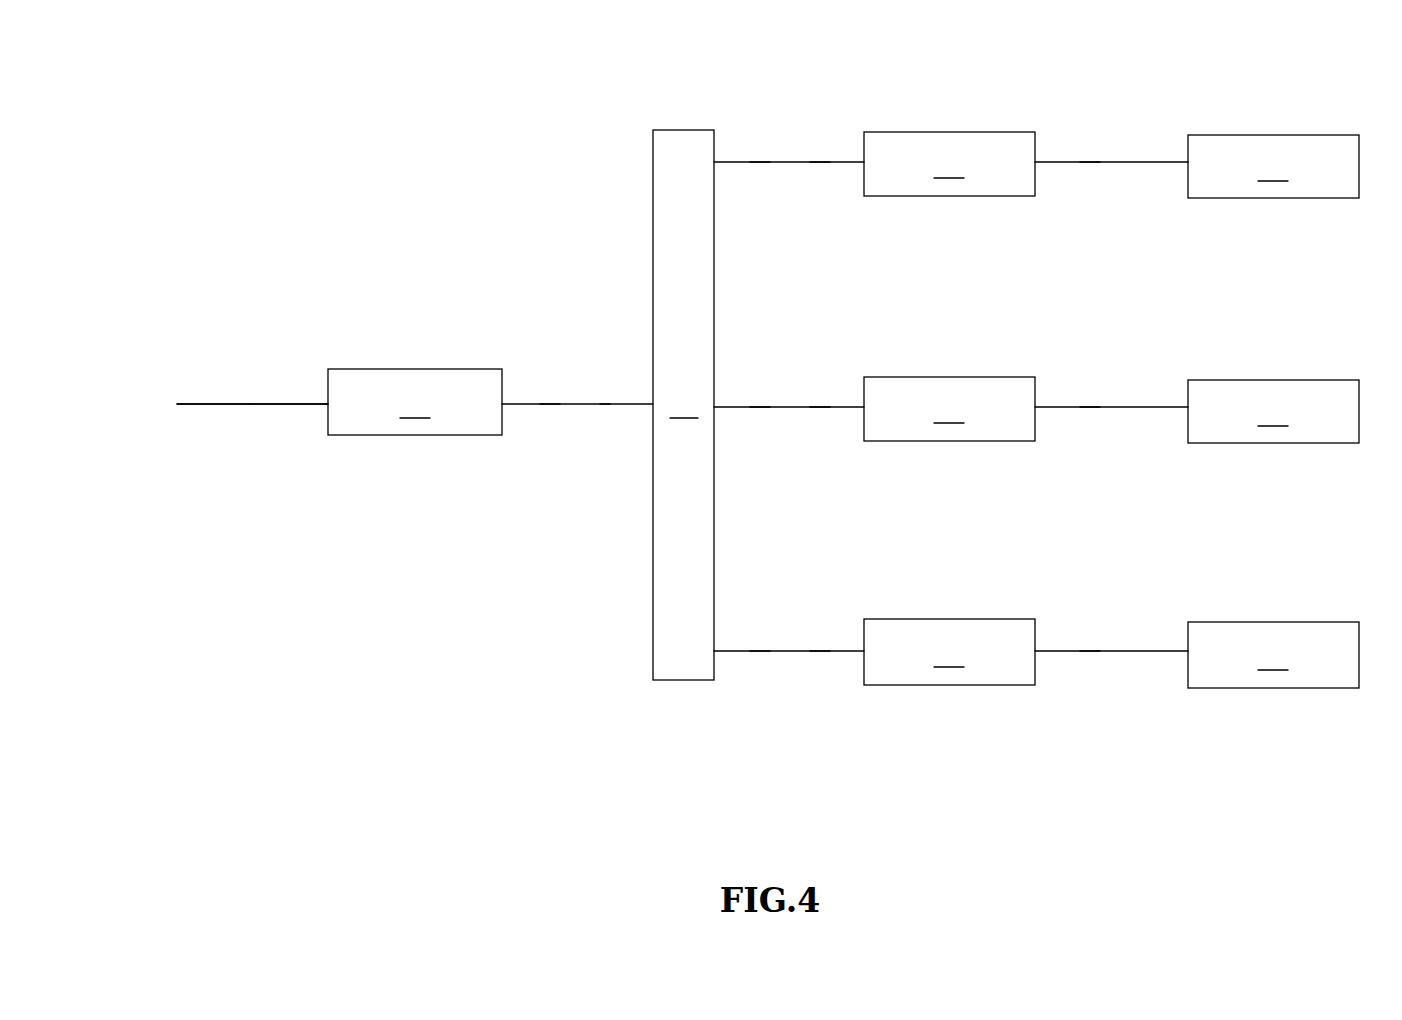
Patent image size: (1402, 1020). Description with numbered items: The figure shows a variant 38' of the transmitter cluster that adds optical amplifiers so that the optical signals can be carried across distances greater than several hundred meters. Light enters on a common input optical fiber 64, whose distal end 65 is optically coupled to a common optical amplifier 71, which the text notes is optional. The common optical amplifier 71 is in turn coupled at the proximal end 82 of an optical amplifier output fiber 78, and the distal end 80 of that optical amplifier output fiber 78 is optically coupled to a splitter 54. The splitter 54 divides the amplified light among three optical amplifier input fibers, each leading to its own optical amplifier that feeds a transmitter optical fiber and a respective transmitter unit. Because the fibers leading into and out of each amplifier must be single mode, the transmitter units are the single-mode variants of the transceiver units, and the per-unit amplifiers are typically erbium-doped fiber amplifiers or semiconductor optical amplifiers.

The variant of transmitter 38' is at (333, 228).
The common input optical fiber 64 is at (201, 402).
The distal end of common input optical fiber 65 is at (326, 406).
The common optical amplifier 71 is at (415, 402).
The proximal end of optical amplifier output fiber 82 is at (504, 398).
The optical amplifier output fiber 78 is at (568, 408).
The distal end of optical amplifier output fiber 80 is at (652, 401).
The splitter 54 is at (683, 405).